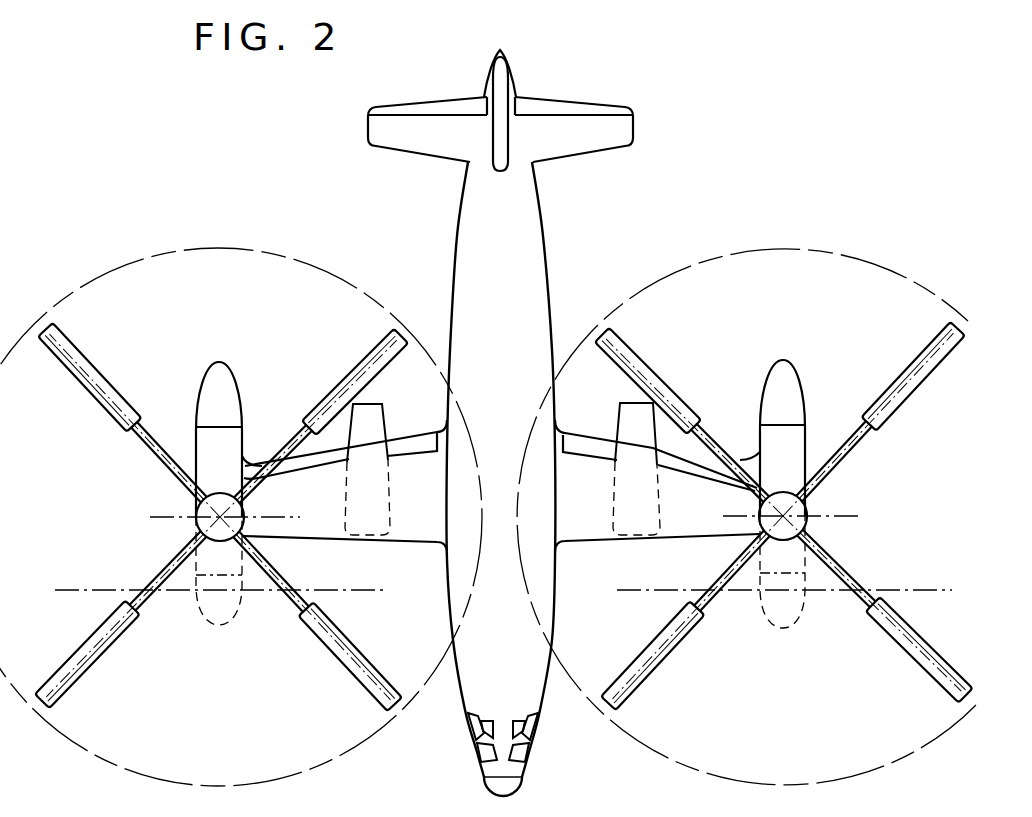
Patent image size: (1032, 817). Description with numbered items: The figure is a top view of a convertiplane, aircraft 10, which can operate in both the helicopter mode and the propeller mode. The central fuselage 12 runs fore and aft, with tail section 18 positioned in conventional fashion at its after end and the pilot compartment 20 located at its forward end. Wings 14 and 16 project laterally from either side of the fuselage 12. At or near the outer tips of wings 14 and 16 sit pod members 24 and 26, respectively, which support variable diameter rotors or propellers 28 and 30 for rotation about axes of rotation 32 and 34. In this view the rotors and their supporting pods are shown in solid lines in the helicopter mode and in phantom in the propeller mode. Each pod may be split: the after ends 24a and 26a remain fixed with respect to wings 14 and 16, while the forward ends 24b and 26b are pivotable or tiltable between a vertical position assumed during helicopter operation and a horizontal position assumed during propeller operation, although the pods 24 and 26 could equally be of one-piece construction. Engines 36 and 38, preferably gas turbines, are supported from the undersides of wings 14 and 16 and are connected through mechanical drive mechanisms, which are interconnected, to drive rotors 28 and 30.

The aircraft 10 is at (700, 200).
The fuselage 12 is at (500, 282).
The wing 14 is at (328, 530).
The wing 16 is at (688, 528).
The tail section 18 is at (607, 125).
The pilot compartment 20 is at (490, 752).
The pod member 24 is at (197, 450).
The after end of pod 24a is at (222, 375).
The forward end of pod 24b is at (220, 617).
The pod member 26 is at (805, 440).
The after end of pod 26a is at (783, 373).
The forward end of pod 26b is at (780, 618).
The variable diameter rotor 28 is at (77, 357).
The variable diameter rotor 30 is at (922, 352).
The axis of rotation 32 is at (197, 502).
The axis of rotation 34 is at (803, 502).
The engine 36 is at (373, 428).
The engine 38 is at (628, 420).